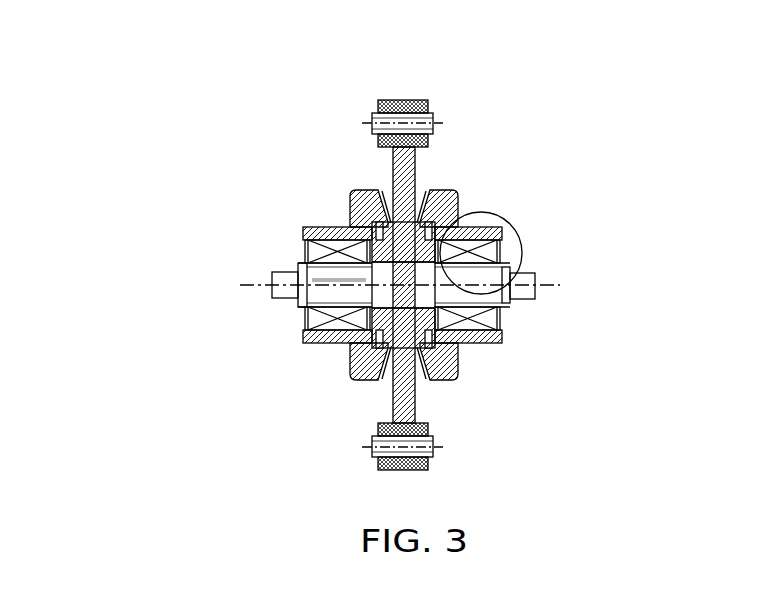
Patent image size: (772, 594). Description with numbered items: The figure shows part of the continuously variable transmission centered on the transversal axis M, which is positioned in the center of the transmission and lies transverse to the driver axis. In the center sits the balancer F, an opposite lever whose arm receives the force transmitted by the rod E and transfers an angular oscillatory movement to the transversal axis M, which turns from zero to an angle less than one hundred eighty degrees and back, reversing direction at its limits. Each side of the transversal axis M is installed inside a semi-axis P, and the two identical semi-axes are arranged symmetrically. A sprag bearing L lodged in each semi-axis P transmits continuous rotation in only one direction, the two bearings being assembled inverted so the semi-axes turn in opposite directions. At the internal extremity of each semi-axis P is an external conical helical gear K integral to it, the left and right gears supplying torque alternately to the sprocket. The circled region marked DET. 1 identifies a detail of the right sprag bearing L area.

The conical gear K is at (367, 188).
The semi-axis P is at (322, 224).
The transversal axis M is at (283, 270).
The sprag bearing L is at (462, 252).
The rod E is at (438, 102).
The balancer F is at (422, 405).
The detail 1 circle DET. 1 is at (520, 258).